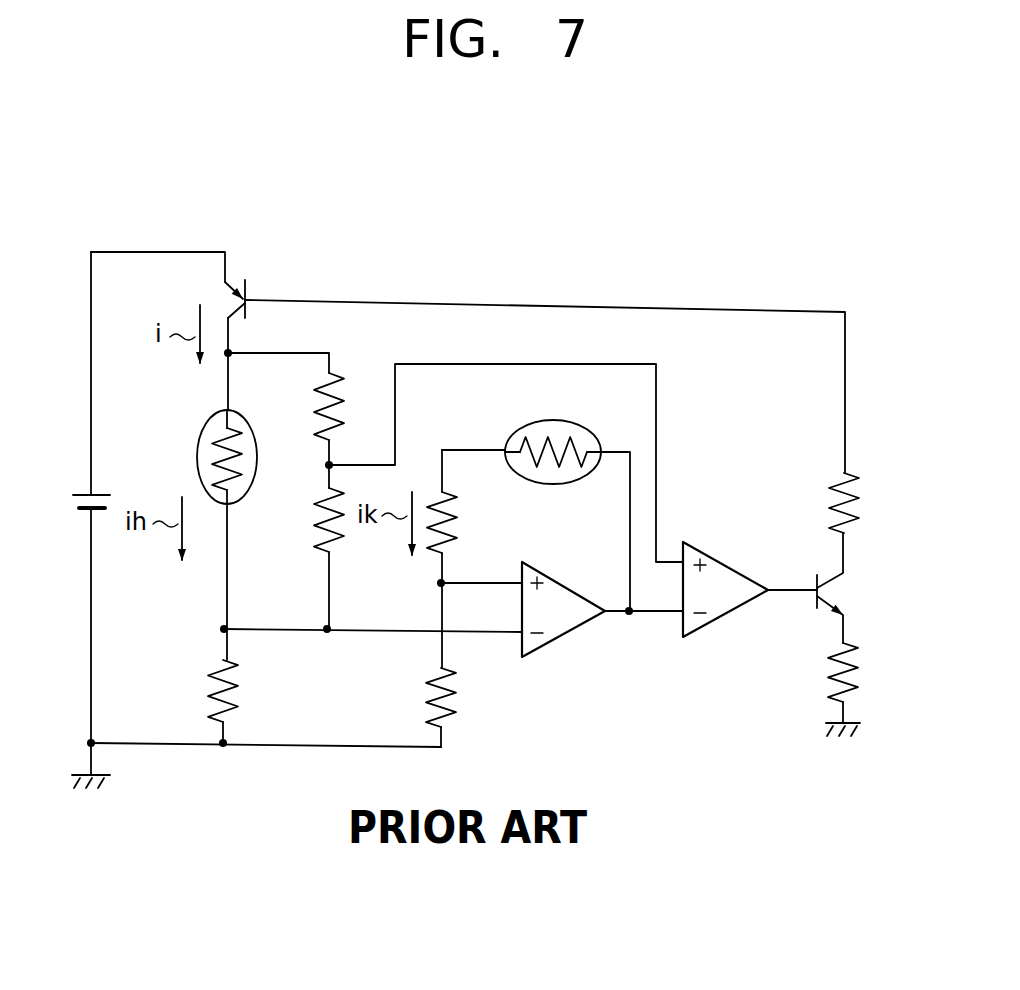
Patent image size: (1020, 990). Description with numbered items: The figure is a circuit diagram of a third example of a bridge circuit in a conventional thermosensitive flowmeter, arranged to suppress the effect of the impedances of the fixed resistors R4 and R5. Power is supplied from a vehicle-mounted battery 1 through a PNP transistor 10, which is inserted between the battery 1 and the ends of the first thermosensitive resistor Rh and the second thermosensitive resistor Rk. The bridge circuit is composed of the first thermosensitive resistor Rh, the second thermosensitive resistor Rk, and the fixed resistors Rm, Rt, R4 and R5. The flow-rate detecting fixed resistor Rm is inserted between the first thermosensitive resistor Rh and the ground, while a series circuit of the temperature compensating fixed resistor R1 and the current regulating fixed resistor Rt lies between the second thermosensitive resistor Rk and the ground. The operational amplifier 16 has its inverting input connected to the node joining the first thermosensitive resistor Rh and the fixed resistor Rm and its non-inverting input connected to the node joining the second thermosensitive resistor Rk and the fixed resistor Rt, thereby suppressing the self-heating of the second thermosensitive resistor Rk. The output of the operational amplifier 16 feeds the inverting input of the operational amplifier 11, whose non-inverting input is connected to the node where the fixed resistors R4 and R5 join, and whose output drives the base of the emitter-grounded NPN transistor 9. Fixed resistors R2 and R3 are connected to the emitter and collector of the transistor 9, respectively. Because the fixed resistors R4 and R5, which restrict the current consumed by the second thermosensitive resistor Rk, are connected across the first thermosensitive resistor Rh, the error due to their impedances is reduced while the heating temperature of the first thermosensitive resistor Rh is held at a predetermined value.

The battery 1 is at (104, 492).
The NPN transistor 9 is at (843, 592).
The PNP transistor 10 is at (250, 284).
The operational amplifier 11 is at (705, 553).
The operational amplifier 16 is at (565, 585).
The first thermosensitive resistor Rh is at (198, 442).
The second thermosensitive resistor Rk is at (582, 428).
The temperature compensating fixed resistor R1 is at (462, 517).
The fixed resistor R2 is at (827, 676).
The fixed resistor R3 is at (827, 503).
The fixed resistor R4 is at (310, 393).
The fixed resistor R5 is at (313, 524).
The fixed resistor Rm is at (200, 696).
The current regulating fixed resistor Rt is at (458, 697).